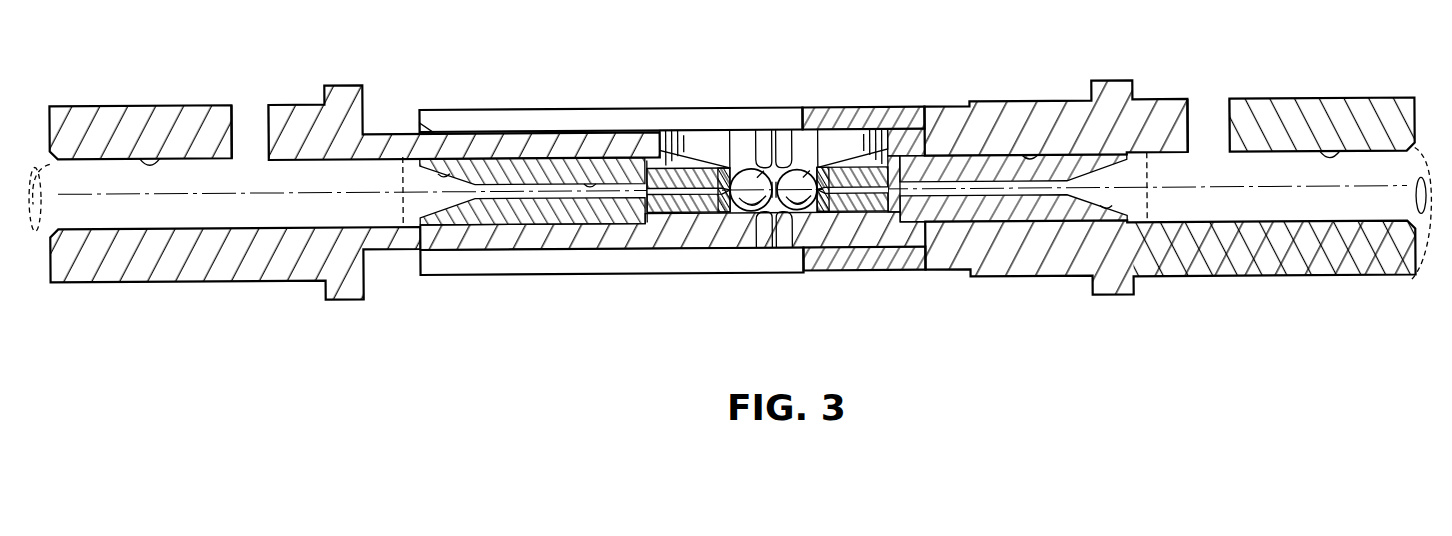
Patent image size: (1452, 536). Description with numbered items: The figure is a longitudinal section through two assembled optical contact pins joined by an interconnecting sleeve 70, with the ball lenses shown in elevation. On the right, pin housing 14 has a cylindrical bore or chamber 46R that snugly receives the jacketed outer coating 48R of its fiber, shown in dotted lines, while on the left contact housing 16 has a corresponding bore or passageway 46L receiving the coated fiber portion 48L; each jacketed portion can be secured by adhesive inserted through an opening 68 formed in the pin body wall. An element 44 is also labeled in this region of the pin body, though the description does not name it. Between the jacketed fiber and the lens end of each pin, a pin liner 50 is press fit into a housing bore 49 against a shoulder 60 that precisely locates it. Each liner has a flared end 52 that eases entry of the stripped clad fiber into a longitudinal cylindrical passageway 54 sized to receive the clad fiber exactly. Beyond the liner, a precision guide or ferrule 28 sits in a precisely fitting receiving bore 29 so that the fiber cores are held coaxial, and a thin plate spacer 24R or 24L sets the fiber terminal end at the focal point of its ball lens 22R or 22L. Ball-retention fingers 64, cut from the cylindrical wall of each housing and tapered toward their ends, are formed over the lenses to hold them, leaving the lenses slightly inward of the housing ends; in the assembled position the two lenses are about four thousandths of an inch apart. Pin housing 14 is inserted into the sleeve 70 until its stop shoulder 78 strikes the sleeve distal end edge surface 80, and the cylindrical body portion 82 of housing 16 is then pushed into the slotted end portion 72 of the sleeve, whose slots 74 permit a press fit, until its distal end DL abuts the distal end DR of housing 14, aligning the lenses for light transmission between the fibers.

The optical contact pin housing 14 is at (1248, 101).
The optical contact pin housing 16 is at (336, 80).
The ball lens 22L is at (738, 251).
The ball lens 22R is at (811, 214).
The spacer 24L is at (735, 168).
The spacer 24R is at (808, 170).
The precision guide 28 is at (684, 214).
The receiving bore 29 is at (716, 214).
The cable passage 44 is at (480, 222).
The bore or passageway 46L is at (150, 153).
The cylindrical bore or chamber 46R is at (1332, 152).
The coated fiber portion 48L is at (40, 140).
The outer coating 48R is at (1412, 280).
The housing bore 49 is at (1032, 158).
The pin liner 50 is at (560, 215).
The flared end 52 is at (443, 172).
The liner longitudinal cylindrical passageway 54 is at (590, 160).
The shoulder 60 is at (630, 216).
The ball-retention finger 64 is at (783, 140).
The opening 68 is at (259, 112).
The interconnecting sleeve 70 is at (709, 108).
The slotted end portion 72 is at (540, 107).
The slot 74 is at (645, 122).
The stop shoulder 78 is at (900, 121).
The sleeve distal end edge surface 80 is at (942, 126).
The cylindrical body portion 82 is at (397, 139).
The distal end DL is at (789, 250).
The distal end DR is at (775, 136).